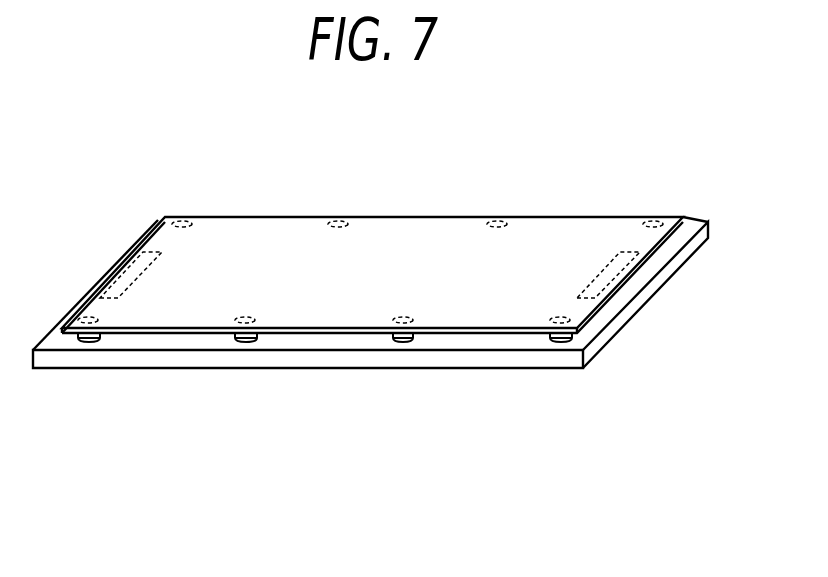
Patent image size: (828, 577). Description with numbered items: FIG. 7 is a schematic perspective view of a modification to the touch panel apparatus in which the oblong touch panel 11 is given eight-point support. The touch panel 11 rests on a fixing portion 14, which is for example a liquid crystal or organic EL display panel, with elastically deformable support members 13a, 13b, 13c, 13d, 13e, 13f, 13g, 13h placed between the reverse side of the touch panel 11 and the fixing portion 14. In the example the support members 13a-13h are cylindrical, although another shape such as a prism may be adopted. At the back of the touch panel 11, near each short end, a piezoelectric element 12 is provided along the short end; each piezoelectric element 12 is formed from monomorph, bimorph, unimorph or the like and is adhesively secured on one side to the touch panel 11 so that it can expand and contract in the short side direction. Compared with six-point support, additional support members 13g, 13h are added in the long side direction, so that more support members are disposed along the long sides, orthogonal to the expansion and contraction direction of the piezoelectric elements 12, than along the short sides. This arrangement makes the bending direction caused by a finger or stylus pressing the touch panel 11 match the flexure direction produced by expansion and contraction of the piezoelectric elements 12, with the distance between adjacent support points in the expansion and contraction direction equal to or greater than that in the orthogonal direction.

The touch panel 11 is at (440, 232).
The piezoelectric element 12 is at (127, 272).
The support member 13a is at (662, 221).
The support member 13b is at (191, 221).
The support member 13c is at (90, 342).
The support member 13d is at (561, 342).
The support member 13e is at (506, 221).
The support member 13f is at (348, 221).
The support member 13g is at (403, 342).
The support member 13h is at (246, 342).
The fixing portion 14 is at (473, 368).